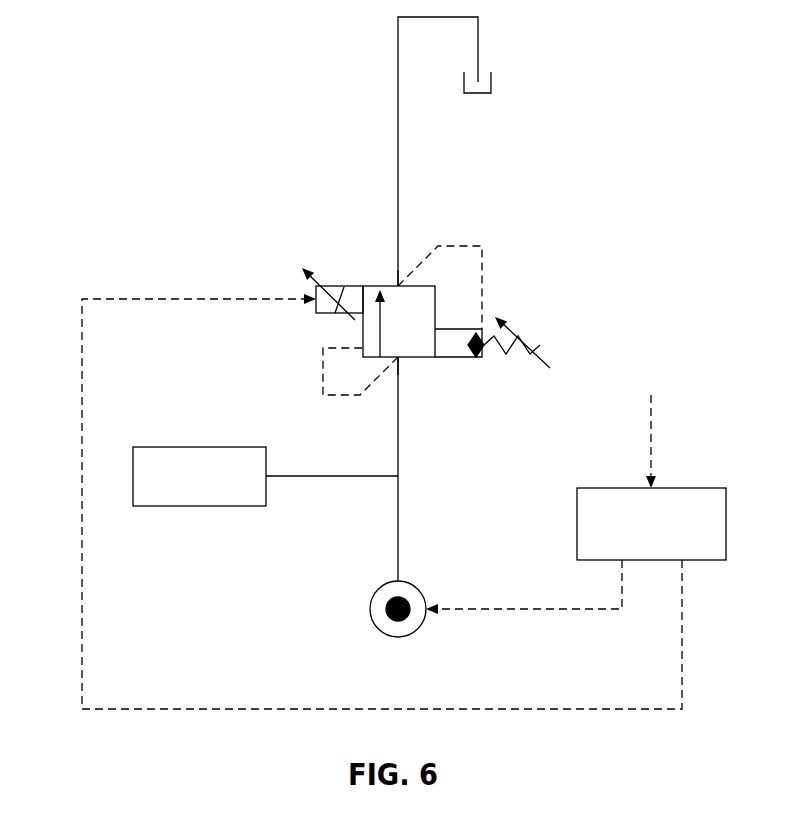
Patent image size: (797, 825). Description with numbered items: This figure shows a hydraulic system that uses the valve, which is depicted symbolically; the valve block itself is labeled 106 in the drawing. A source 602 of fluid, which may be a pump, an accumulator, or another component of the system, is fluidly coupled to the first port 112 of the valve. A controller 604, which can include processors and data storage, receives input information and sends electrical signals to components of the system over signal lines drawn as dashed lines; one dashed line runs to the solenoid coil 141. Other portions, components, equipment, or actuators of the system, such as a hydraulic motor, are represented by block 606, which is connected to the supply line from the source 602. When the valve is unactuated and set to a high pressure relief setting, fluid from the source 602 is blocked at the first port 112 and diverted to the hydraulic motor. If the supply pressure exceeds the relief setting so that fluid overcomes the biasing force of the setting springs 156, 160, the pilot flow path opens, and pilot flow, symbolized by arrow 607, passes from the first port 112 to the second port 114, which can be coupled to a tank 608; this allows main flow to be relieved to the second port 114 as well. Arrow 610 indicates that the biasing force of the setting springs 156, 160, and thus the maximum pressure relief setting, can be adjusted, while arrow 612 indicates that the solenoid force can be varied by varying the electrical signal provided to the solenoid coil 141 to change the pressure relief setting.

The valve 106 is at (328, 262).
The first port 112 is at (408, 365).
The second port 114 is at (390, 280).
The solenoid coil 141 is at (322, 314).
The setting spring 156 is at (534, 397).
The setting spring 160 is at (508, 346).
The source of fluid 602 is at (370, 608).
The controller 604 is at (404, 501).
The block 606 is at (265, 476).
The arrow 607 is at (472, 358).
The tank 608 is at (491, 80).
The arrow 610 is at (512, 308).
The arrow 612 is at (300, 262).